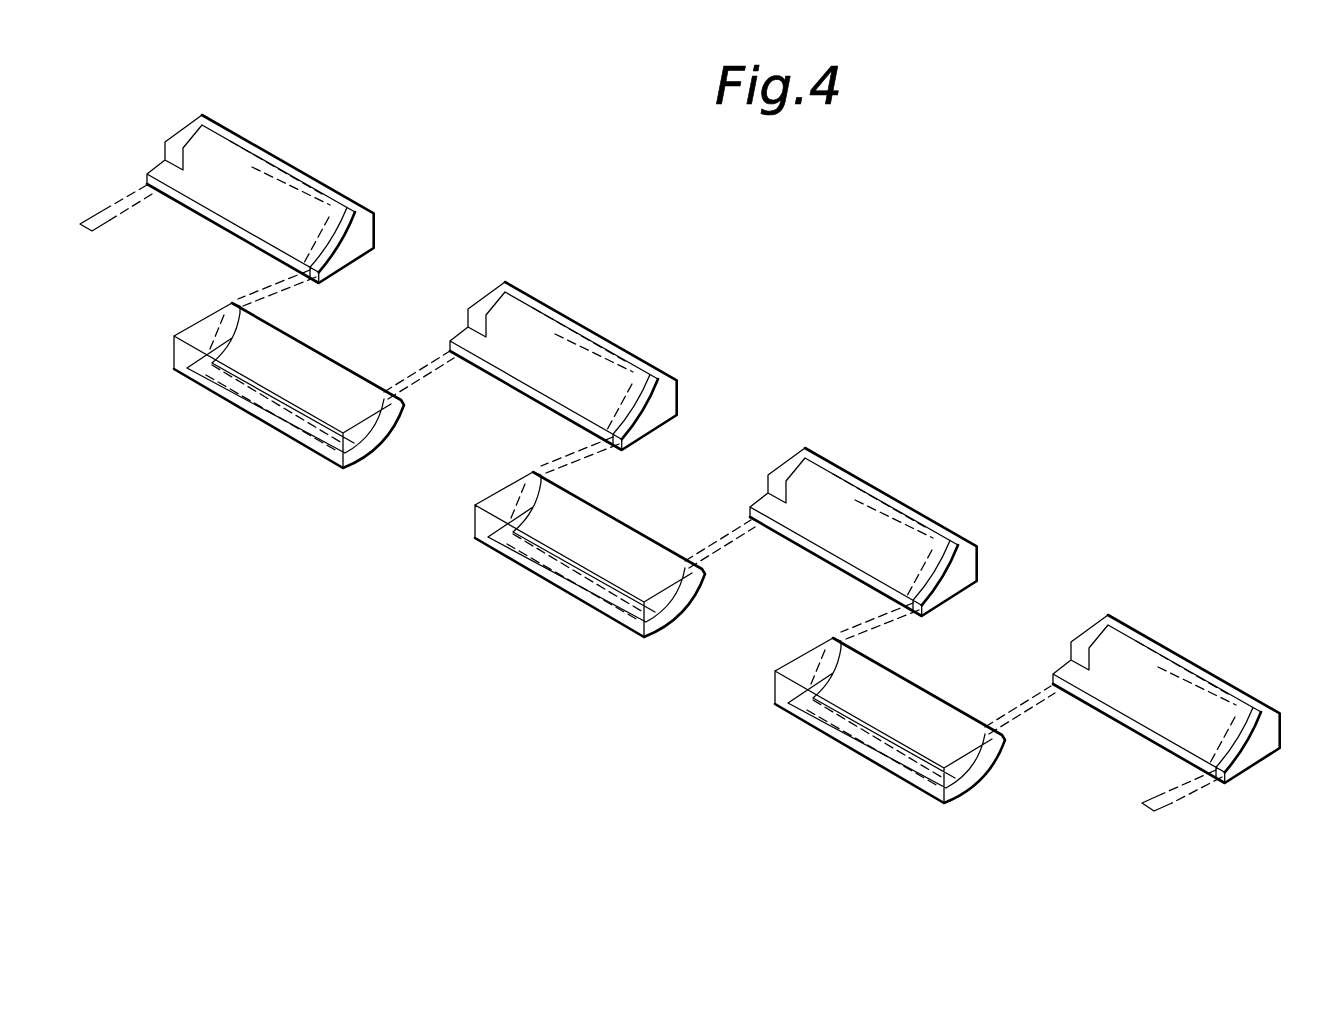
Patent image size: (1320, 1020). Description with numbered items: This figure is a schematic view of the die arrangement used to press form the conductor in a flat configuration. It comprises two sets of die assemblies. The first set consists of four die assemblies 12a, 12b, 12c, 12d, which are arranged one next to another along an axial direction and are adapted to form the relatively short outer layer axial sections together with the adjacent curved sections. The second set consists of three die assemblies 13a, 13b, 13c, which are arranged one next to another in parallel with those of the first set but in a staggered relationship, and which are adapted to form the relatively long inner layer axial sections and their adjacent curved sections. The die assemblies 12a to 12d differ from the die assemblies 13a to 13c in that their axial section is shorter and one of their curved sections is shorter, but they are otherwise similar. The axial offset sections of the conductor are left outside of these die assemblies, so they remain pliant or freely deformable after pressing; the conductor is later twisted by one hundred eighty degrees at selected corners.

The die assembly of the first set 12a is at (288, 190).
The die assembly of the first set 12b is at (598, 366).
The die assembly of the first set 12c is at (880, 522).
The die assembly of the first set 12d is at (1165, 685).
The die assembly of the second set 13a is at (293, 387).
The die assembly of the second set 13b is at (578, 543).
The die assembly of the second set 13c is at (881, 716).